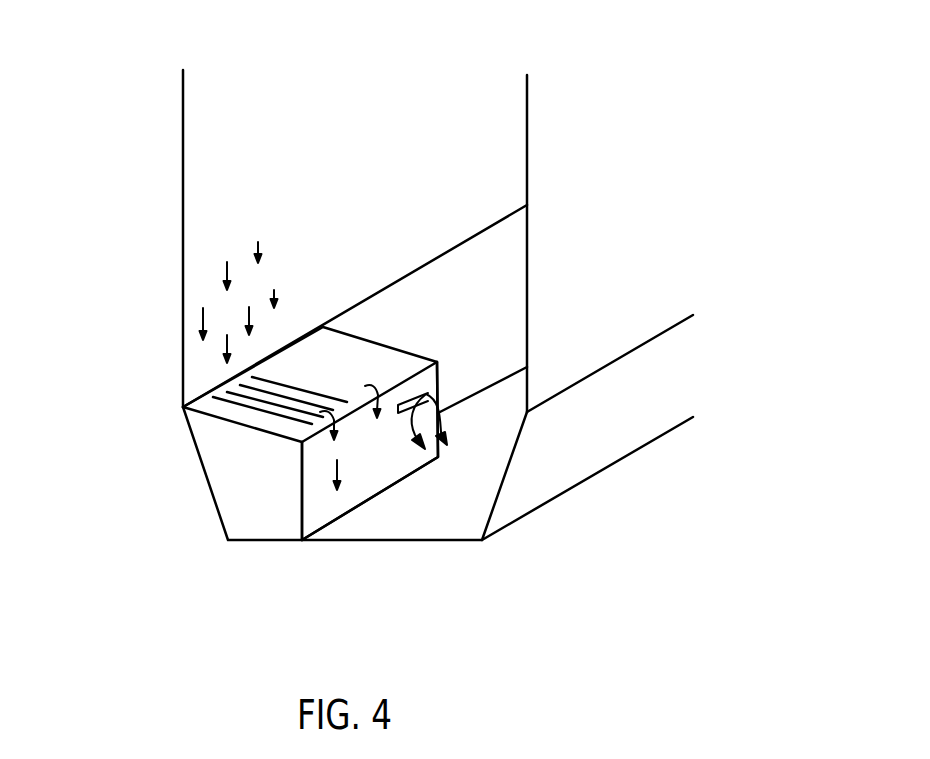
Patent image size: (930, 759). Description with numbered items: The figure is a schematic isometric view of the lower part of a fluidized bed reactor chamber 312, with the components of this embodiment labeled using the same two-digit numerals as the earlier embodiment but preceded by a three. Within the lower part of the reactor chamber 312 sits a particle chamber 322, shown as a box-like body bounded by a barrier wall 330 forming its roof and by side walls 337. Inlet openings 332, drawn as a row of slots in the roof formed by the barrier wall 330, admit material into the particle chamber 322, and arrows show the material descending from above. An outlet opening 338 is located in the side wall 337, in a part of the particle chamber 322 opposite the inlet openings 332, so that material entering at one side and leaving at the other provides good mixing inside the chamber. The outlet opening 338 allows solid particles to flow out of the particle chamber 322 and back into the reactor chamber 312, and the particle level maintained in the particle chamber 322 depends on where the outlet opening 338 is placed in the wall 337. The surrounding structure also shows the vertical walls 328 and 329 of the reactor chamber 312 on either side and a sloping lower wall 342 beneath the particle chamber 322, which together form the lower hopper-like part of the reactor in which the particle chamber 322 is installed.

The reactor chamber 312 is at (452, 213).
The particle chamber 322 is at (404, 321).
The right duct wall 328 is at (527, 142).
The left duct wall 329 is at (183, 152).
The barrier wall 330 is at (208, 405).
The inlet openings 332 is at (288, 385).
The wall 337 is at (368, 472).
The outlet opening 338 is at (433, 391).
The hopper wall 342 is at (202, 465).